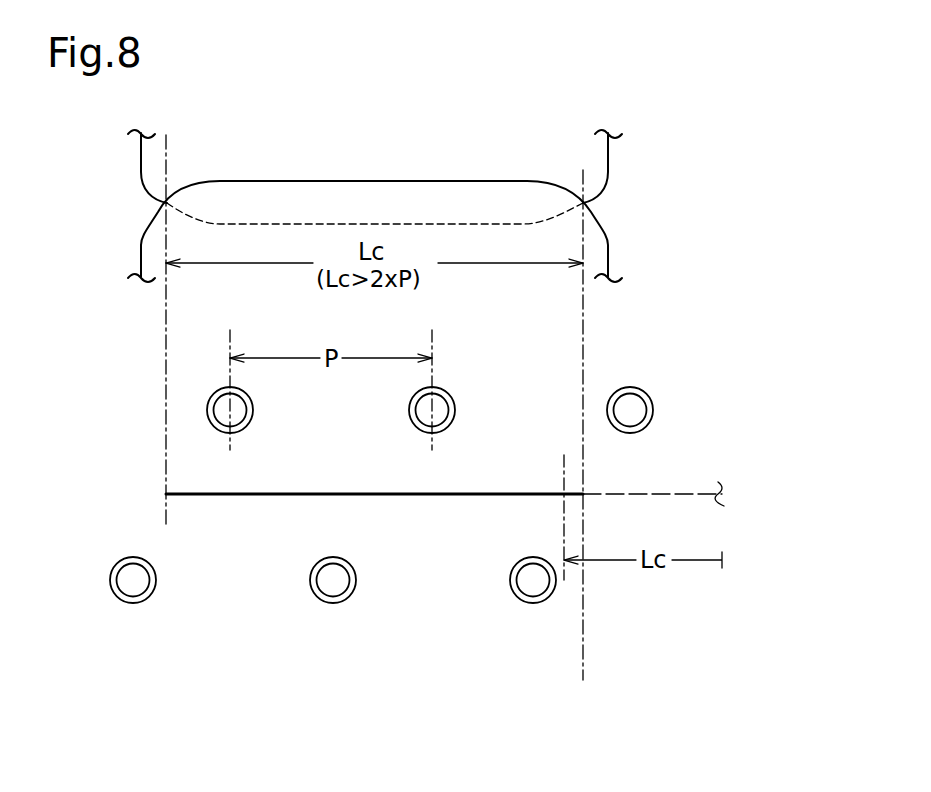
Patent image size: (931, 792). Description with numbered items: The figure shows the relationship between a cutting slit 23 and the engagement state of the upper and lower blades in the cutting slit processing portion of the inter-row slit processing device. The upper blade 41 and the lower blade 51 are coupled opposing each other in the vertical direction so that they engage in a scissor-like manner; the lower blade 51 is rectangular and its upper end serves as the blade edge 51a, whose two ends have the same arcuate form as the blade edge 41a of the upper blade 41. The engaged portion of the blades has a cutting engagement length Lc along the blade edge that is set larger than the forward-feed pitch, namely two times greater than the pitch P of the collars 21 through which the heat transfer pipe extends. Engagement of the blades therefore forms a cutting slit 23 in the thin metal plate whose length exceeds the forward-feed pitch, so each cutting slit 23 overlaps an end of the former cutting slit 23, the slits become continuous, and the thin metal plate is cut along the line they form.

The upper blade 41 is at (609, 150).
The blade edge of the upper blade 41a is at (324, 227).
The lower blade 51 is at (609, 250).
The blade edge 51a is at (427, 179).
The collars 21 is at (254, 410).
The cutting slit 23 is at (447, 499).